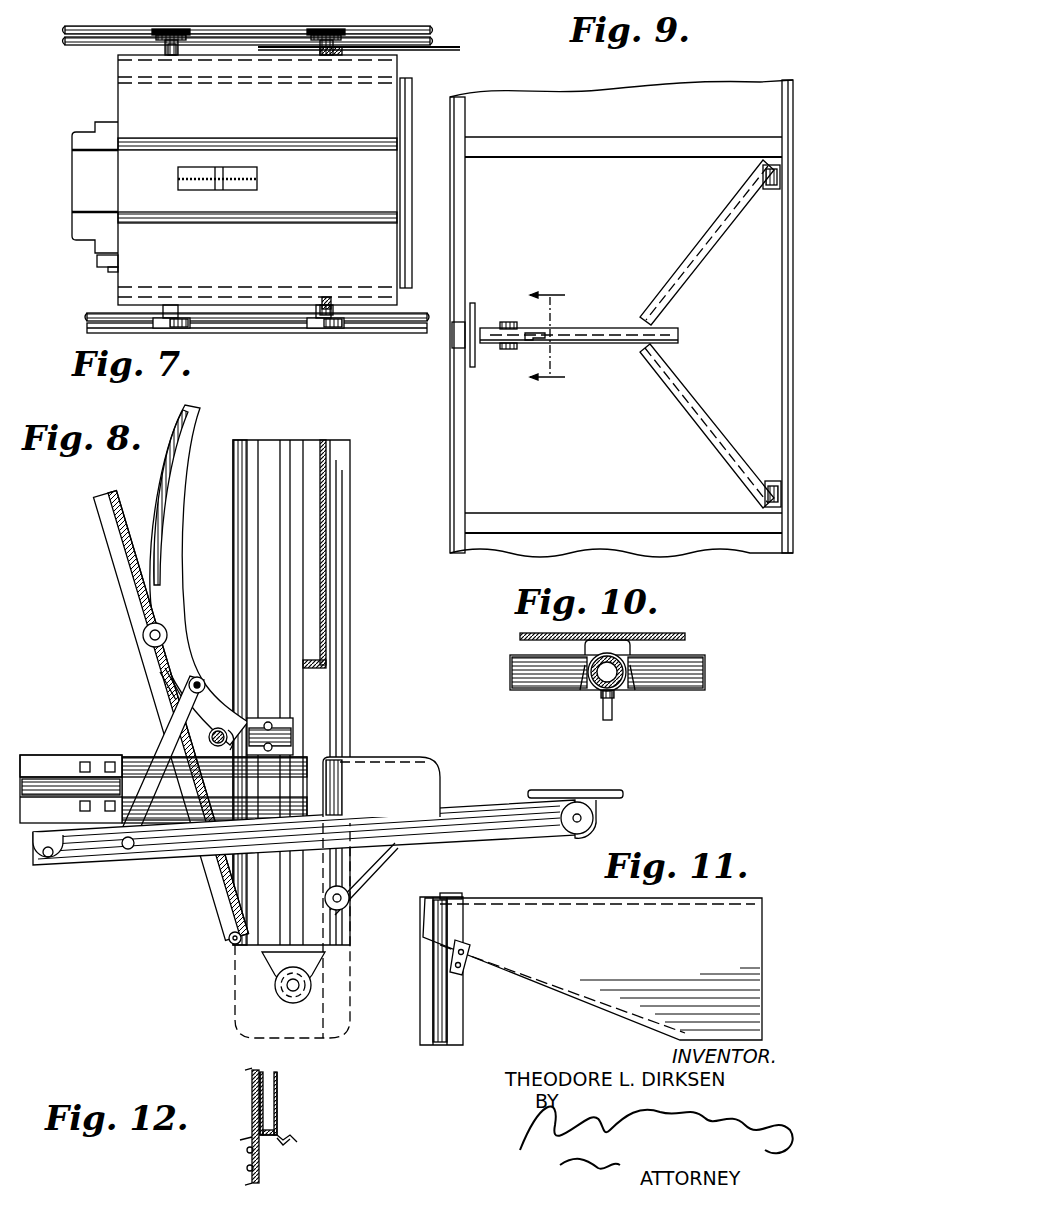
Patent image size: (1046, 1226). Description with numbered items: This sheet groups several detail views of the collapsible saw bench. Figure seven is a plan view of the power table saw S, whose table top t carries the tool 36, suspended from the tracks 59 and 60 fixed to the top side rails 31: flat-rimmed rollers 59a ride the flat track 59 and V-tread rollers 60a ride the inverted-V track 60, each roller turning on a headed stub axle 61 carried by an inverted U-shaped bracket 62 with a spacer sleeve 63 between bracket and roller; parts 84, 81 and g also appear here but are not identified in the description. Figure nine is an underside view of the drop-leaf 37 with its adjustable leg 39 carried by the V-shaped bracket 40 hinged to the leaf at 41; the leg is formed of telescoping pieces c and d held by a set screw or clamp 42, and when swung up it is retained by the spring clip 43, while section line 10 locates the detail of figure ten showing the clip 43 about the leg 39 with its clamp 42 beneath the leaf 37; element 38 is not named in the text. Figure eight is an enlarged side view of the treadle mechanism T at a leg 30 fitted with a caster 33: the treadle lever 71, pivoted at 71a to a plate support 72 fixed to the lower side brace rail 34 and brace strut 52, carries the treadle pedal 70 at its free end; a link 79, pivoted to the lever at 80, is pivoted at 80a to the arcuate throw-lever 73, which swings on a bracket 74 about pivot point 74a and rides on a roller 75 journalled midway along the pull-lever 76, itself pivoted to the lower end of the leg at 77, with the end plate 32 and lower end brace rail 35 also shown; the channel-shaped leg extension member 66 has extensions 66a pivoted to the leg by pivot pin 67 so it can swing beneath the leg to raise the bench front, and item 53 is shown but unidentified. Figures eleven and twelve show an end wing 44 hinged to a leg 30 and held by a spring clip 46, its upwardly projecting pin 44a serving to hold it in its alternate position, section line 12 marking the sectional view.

In FIG. 7, the headed stub axle 61 is at (172, 29).
In FIG. 7, the rollers having V-shaped treads 60a is at (176, 27).
In FIG. 7, the track 60 is at (405, 27).
In FIG. 7, the bracket 84 is at (332, 50).
In FIG. 7, the inverted U-shaped bracket 62 is at (395, 65).
In FIG. 7, the rod 81 is at (457, 50).
In FIG. 7, the table top t is at (388, 98).
In FIG. 7, the guide rail g is at (345, 142).
In FIG. 7, the tool 36 is at (257, 175).
In FIG. 7, the power table-saw s is at (388, 195).
In FIG. 7, the spacer sleeve 63 is at (325, 299).
In FIG. 7, the rollers having flat rimmed treads 59a is at (190, 325).
In FIG. 7, the track 59 is at (262, 333).
In FIG. 9, the drop-leaf 37 is at (609, 90).
In FIG. 10, the drop-leaf 37 is at (686, 636).
In FIG. 9, the pivots 41 is at (772, 190).
In FIG. 9, the V-shaped bracket 40 is at (655, 352).
In FIG. 9, the adjustable leg 39 is at (608, 330).
In FIG. 10, the adjustable leg 39 is at (593, 685).
In FIG. 9, the spring clip 43 is at (508, 322).
In FIG. 10, the spring clip 43 is at (625, 685).
In FIG. 9, the set screw or clamp 42 is at (535, 342).
In FIG. 10, the set screw or clamp 42 is at (608, 722).
In FIG. 9, the telescoping piece c is at (480, 340).
In FIG. 9, the telescoping piece d is at (596, 343).
In FIG. 9, the bracket 38 is at (455, 340).
In FIG. 9, the top side rails 31 is at (458, 563).
In FIG. 9, the section line 10— 10 is at (547, 336).
In FIG. 8, the arcuate throw-lever 73 is at (183, 493).
In FIG. 8, the legs 30 is at (350, 527).
In FIG. 11, the legs 30 is at (463, 1044).
In FIG. 12, the legs 30 is at (235, 1126).
In FIG. 8, the pull-lever 76 is at (112, 572).
In FIG. 8, the roller 75 is at (143, 633).
In FIG. 8, the end plates 32 is at (318, 639).
In FIG. 8, the bracket 74 is at (244, 710).
In FIG. 8, the pivot 80a is at (170, 697).
In FIG. 8, the link 79 is at (170, 712).
In FIG. 8, the lower side brace rails 34 is at (145, 748).
In FIG. 8, the brace strut 52 is at (45, 757).
In FIG. 8, the fasteners 53 is at (107, 762).
In FIG. 8, the lower end brace rails 35 is at (310, 752).
In FIG. 8, the pivot point 74a is at (227, 748).
In FIG. 8, the channel shaped member 66 is at (440, 779).
In FIG. 8, the treadle mechanism T is at (496, 808).
In FIG. 8, the treadle pedal 70 is at (545, 790).
In FIG. 8, the plate support 72 is at (46, 830).
In FIG. 8, the pivot 71a is at (48, 860).
In FIG. 8, the pivot 80 is at (127, 850).
In FIG. 8, the treadle lever 71 is at (165, 858).
In FIG. 8, the extensions 66a is at (370, 873).
In FIG. 8, the pivot pin 67 is at (350, 899).
In FIG. 8, the pivot 77 is at (229, 939).
In FIG. 8, the casters 33 is at (276, 993).
In FIG. 11, the upwardly projecting pins 44a is at (445, 896).
In FIG. 11, the section line 12— 12 is at (483, 928).
In FIG. 11, the spring clips 46 is at (470, 947).
In FIG. 12, the spring clips 46 is at (298, 1140).
In FIG. 11, the wing 44 is at (582, 1000).
In FIG. 12, the wing 44 is at (277, 1104).